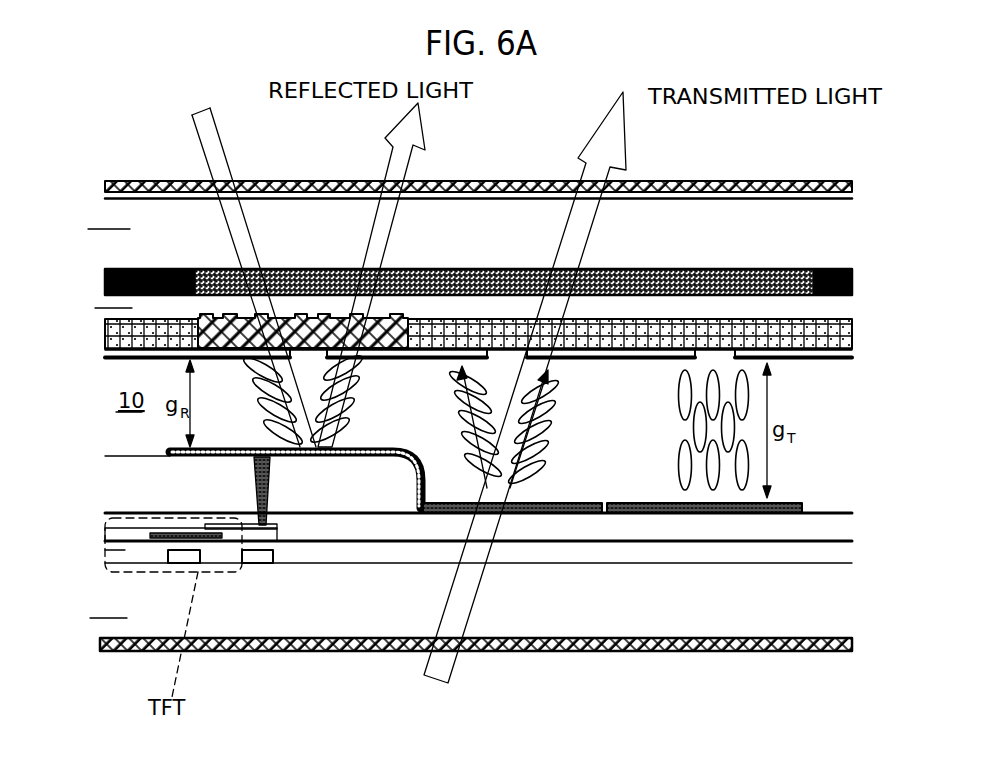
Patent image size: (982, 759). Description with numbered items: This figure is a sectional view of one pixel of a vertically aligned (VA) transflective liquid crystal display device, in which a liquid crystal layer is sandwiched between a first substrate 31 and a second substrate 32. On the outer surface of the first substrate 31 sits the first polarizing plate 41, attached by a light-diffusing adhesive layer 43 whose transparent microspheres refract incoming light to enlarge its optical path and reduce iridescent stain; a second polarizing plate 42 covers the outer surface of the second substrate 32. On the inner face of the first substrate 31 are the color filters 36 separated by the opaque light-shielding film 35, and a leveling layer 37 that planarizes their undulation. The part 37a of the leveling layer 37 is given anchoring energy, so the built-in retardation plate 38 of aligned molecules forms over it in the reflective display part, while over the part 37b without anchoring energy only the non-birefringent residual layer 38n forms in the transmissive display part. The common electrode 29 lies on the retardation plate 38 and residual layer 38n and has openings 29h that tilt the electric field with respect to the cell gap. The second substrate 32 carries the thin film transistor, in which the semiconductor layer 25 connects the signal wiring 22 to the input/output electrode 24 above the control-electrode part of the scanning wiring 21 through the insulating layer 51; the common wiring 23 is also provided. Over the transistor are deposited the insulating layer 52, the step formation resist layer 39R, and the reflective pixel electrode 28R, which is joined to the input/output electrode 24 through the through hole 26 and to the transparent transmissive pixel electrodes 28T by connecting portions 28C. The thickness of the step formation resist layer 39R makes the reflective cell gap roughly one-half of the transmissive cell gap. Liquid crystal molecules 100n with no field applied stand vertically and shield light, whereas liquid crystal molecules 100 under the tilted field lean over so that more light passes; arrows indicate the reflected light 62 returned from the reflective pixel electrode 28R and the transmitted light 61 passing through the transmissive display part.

The first polarizing plate 41 is at (450, 169).
The light-diffusing adhesive layer 43 is at (450, 188).
The first substrate 31 is at (89, 218).
The color filter 36 is at (218, 277).
The light-shielding film 35 is at (450, 275).
The leveling layer 37 is at (90, 296).
The residual layer 38n is at (450, 331).
The built-in retardation plate 38 is at (310, 318).
The part of the leveling layer 37a is at (340, 320).
The part of the leveling layer 37b is at (689, 307).
The common electrode 29 is at (127, 357).
The opening 29h is at (264, 388).
The reflective pixel electrode 28R is at (185, 445).
The step formation resist layer 39R is at (109, 464).
The transmissive pixel electrode 28T is at (612, 477).
The connecting portion 28C is at (413, 503).
The through hole 26 is at (268, 487).
The insulating layer 52 is at (452, 500).
The signal wiring 22 is at (157, 533).
The input/output electrode 24 is at (234, 609).
The semiconductor layer 25 is at (165, 538).
The insulating layer 51 is at (452, 568).
The scanning wiring 21 is at (168, 622).
The common wiring 23 is at (276, 622).
The second substrate 32 is at (89, 634).
The second polarizing plate 42 is at (140, 651).
The liquid crystal molecules 100 is at (401, 420).
The liquid crystal molecules 100n is at (772, 430).
The reflected light 62 is at (392, 168).
The transmitted light 61 is at (620, 165).